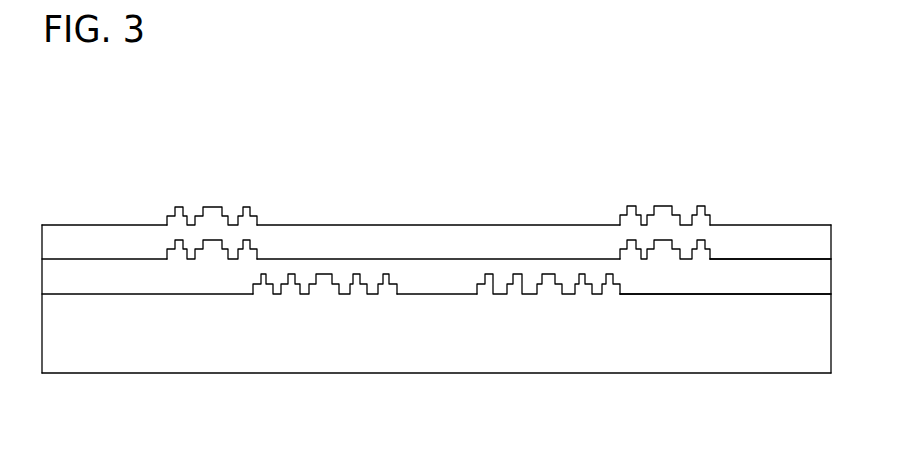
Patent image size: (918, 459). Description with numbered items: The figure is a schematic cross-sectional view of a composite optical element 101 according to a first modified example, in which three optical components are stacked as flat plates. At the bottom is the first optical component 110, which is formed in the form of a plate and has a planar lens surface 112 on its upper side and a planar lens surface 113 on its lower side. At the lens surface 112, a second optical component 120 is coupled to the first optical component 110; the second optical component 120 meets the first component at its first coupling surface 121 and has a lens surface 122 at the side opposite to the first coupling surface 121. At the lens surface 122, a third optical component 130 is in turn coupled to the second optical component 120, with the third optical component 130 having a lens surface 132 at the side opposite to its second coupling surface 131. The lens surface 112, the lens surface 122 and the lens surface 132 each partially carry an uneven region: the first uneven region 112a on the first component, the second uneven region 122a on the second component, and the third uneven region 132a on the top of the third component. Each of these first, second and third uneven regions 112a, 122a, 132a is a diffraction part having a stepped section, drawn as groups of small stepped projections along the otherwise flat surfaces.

The composite optical element 101 is at (430, 138).
The first optical component 110 is at (812, 352).
The lens surface 112 is at (77, 294).
The first uneven region 112a is at (342, 267).
The lens surface 113 is at (527, 373).
The second optical component 120 is at (732, 278).
The first coupling surface 121 is at (797, 292).
The lens surface 122 is at (145, 259).
The second uneven region 122a is at (223, 237).
The third optical component 130 is at (445, 243).
The second coupling surface 131 is at (720, 259).
The lens surface 132 is at (503, 225).
The third uneven region 132a is at (195, 190).